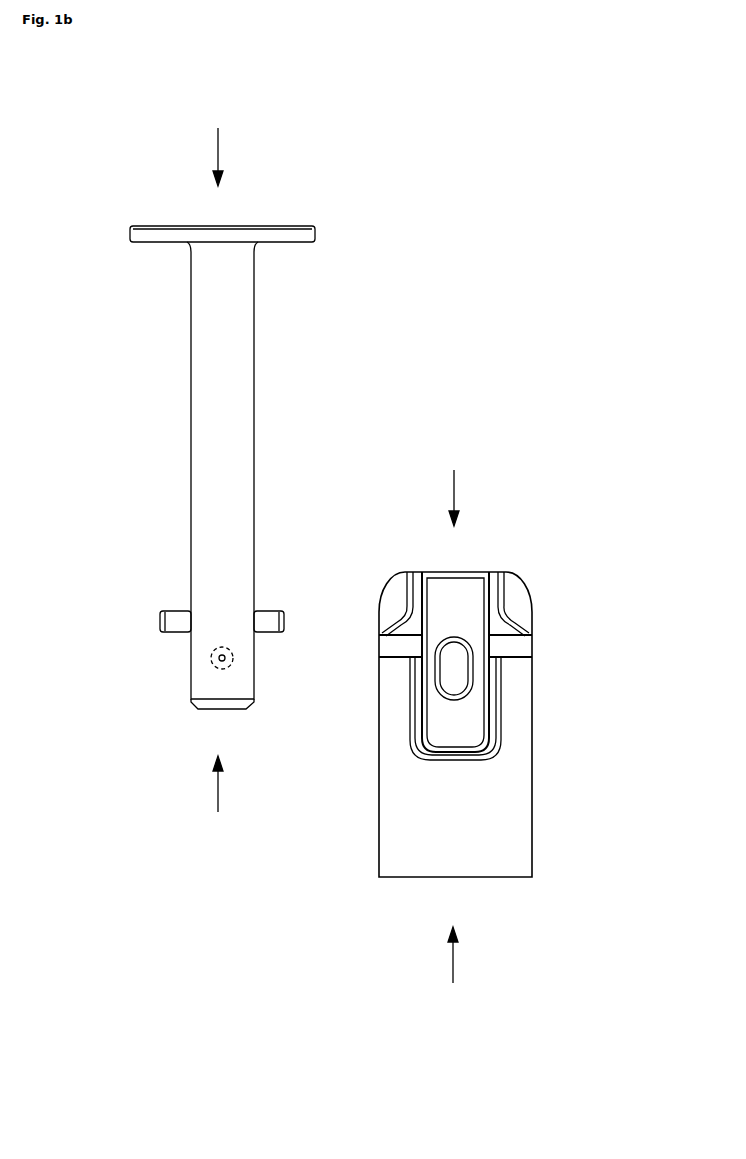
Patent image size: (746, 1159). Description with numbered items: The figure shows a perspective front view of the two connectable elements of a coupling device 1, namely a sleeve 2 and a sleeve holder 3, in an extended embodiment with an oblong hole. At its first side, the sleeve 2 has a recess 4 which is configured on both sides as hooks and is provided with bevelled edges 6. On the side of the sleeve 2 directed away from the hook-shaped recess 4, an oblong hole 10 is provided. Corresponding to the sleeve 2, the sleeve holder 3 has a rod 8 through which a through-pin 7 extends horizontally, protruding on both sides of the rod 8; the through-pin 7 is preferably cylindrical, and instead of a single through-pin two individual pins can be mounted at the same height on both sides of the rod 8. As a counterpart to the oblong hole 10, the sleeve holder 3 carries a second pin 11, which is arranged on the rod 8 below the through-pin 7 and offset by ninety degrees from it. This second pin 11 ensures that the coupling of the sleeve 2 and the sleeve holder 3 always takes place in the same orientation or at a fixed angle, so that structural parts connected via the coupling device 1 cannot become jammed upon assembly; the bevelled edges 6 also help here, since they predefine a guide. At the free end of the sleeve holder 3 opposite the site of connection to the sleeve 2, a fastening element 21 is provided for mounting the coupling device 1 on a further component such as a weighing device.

The coupling device 1 is at (572, 223).
The sleeve 2 is at (634, 749).
The sleeve holder 3 is at (92, 430).
The recess 4 is at (442, 725).
The bevelled edges 6 is at (405, 618).
The through-pin 7 is at (158, 620).
The rod 8 is at (227, 449).
The oblong hole 10 is at (457, 662).
The second pin 11 is at (207, 660).
The fastening element 21 is at (308, 234).